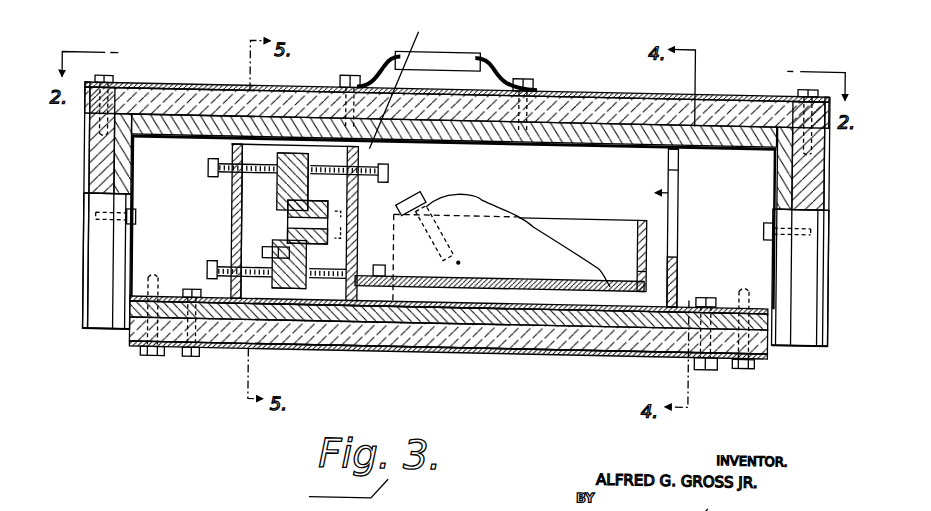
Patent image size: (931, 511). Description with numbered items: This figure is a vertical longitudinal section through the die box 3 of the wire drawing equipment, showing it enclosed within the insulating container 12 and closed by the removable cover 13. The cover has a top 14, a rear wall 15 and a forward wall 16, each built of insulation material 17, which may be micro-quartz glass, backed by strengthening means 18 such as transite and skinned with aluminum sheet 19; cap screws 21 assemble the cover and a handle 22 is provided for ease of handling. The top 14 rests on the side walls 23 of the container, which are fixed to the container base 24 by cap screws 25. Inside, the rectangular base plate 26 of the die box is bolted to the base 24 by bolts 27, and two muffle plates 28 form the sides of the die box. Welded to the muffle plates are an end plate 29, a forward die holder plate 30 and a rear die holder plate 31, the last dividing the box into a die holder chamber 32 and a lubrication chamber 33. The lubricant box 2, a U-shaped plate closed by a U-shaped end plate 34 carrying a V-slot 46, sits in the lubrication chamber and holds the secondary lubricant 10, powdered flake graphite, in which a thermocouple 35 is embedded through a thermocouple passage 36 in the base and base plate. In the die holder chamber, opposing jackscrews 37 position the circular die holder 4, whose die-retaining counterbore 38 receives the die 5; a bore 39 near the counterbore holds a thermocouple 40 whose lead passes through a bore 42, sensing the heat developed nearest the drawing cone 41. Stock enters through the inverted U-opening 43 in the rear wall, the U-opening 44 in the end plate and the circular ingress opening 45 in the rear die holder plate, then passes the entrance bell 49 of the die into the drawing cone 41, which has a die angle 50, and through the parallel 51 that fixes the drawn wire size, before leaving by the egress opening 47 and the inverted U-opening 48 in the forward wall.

The lubricant box 2 is at (501, 261).
The die box 3 is at (680, 274).
The die holder 4 is at (286, 149).
The die 5 is at (310, 246).
The secondary lubricant 10 is at (515, 248).
The insulating container 12 is at (357, 347).
The removable cover 13 is at (650, 83).
The top 14 is at (328, 81).
The rear wall 15 is at (813, 263).
The forward wall 16 is at (82, 307).
The insulation material 17 is at (178, 100).
The strengthening means 18 is at (126, 172).
The aluminum sheet 19 is at (86, 128).
The cap screws 21 is at (110, 78).
The handle 22 is at (455, 45).
The side walls 23 is at (726, 230).
The container base 24 is at (545, 348).
The cap screws 25 is at (152, 356).
The base plate 26 is at (583, 295).
The bolts 27 is at (192, 356).
The muffle plates 28 is at (533, 183).
The end plate 29 is at (669, 160).
The forward die holder plate 30 is at (233, 248).
The rear die holder plate 31 is at (405, 85).
The die holder chamber 32 is at (259, 221).
The lubrication chamber 33 is at (679, 189).
The U-shaped end plate 34 is at (679, 246).
The thermocouple 35 is at (430, 195).
The thermocouple passage 36 is at (423, 348).
The jackscrews 37 is at (214, 176).
The die-retaining counterbore 38 is at (278, 218).
The bore 39 is at (290, 282).
The thermocouple 40 is at (272, 243).
The drawing cone 41 is at (307, 222).
The bore 42 is at (268, 243).
The inverted U-opening 43 is at (805, 290).
The U-opening 44 is at (679, 220).
The circular ingress opening 45 is at (359, 241).
The V-slot 46 is at (650, 212).
The egress opening 47 is at (233, 208).
The inverted U-opening 48 is at (92, 257).
The entrance bell 49 is at (334, 206).
The die angle 50 is at (360, 240).
The parallel 51 is at (292, 149).